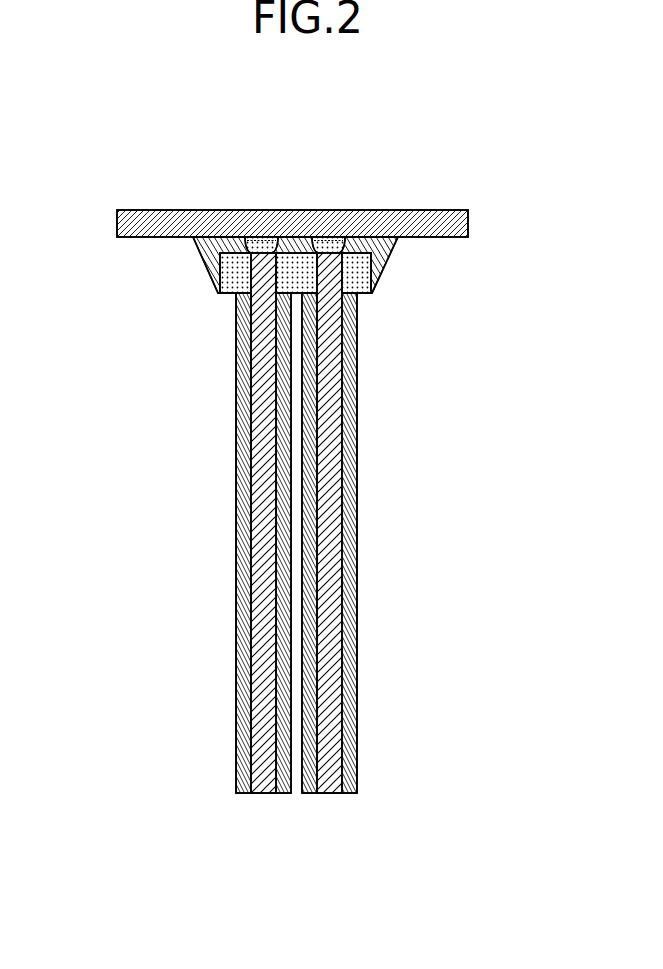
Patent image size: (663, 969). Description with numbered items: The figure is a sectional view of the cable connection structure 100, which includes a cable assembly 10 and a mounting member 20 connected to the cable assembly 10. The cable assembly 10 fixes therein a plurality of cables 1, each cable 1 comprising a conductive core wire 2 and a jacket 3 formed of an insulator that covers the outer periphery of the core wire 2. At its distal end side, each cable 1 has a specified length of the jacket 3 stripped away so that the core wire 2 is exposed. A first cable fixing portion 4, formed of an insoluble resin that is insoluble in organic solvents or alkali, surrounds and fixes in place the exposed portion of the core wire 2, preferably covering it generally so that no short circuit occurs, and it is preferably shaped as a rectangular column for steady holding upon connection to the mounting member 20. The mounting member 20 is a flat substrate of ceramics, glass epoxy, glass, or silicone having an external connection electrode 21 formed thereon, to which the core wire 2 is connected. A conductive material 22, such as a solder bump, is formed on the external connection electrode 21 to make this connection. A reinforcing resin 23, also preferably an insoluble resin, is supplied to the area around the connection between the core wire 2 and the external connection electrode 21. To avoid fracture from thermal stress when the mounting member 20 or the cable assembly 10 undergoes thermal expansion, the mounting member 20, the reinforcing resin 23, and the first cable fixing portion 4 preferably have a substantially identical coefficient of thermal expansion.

The cable connection structure 100 is at (98, 187).
The mounting member 20 is at (468, 222).
The external connection electrode 21 is at (270, 243).
The conductive material 22 is at (233, 243).
The reinforcing resin 23 is at (388, 265).
The first cable fixing portion 4 is at (363, 293).
The cable assembly 10 is at (390, 498).
The cable 1 is at (322, 523).
The core wire 2 is at (347, 390).
The jacket 3 is at (357, 437).